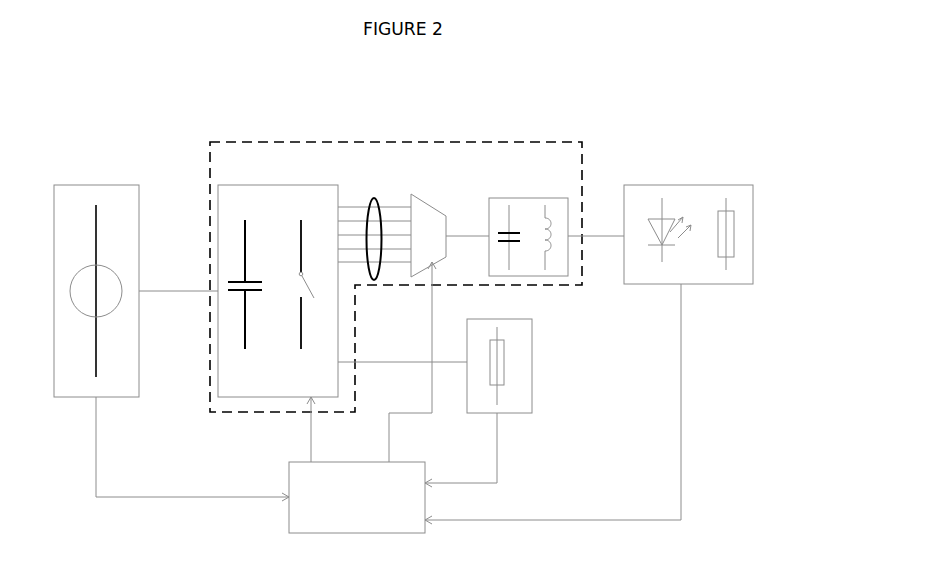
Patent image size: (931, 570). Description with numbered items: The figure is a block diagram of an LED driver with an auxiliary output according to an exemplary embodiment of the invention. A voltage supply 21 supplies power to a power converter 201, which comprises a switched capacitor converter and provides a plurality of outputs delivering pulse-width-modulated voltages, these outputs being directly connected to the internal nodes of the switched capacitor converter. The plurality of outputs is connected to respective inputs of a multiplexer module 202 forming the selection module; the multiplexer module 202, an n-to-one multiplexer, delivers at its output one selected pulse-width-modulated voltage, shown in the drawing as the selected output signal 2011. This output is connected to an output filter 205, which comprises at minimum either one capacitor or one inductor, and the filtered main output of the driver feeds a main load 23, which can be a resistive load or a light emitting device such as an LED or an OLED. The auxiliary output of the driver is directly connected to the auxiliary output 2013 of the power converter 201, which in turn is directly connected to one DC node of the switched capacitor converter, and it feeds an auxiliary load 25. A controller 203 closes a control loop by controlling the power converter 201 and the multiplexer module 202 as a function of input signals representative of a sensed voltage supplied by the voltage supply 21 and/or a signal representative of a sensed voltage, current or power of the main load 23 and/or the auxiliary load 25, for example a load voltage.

The voltage supply 21 is at (80, 185).
The power converter 201 is at (278, 291).
The multiplexer module 202 is at (413, 196).
The PWM signal 2011 is at (449, 236).
The output filter 205 is at (519, 200).
The main load 23 is at (755, 188).
The auxiliary output 2013 is at (349, 362).
The auxiliary load 25 is at (531, 400).
The controller 203 is at (357, 497).